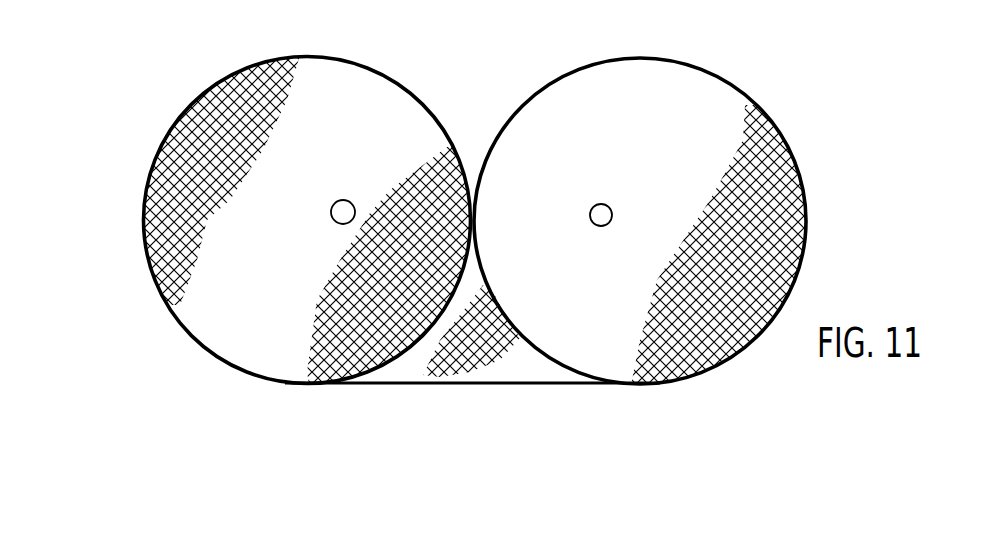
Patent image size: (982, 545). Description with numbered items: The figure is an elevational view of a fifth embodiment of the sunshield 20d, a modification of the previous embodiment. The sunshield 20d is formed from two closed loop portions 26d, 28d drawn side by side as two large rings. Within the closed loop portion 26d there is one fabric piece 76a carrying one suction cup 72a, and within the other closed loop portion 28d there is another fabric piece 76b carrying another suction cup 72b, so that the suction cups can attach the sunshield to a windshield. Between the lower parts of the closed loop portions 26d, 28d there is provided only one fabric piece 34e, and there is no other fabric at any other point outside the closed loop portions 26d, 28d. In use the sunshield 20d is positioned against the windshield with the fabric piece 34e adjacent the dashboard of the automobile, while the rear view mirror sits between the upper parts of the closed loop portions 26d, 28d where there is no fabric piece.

The sunshield 20d is at (113, 220).
The closed loop portion 26d is at (145, 302).
The closed loop portion 28d is at (835, 175).
The fabric piece 34e is at (484, 362).
The suction cup 72a is at (348, 208).
The suction cup 72b is at (596, 208).
The fabric piece 76a is at (243, 98).
The fabric piece 76b is at (603, 97).